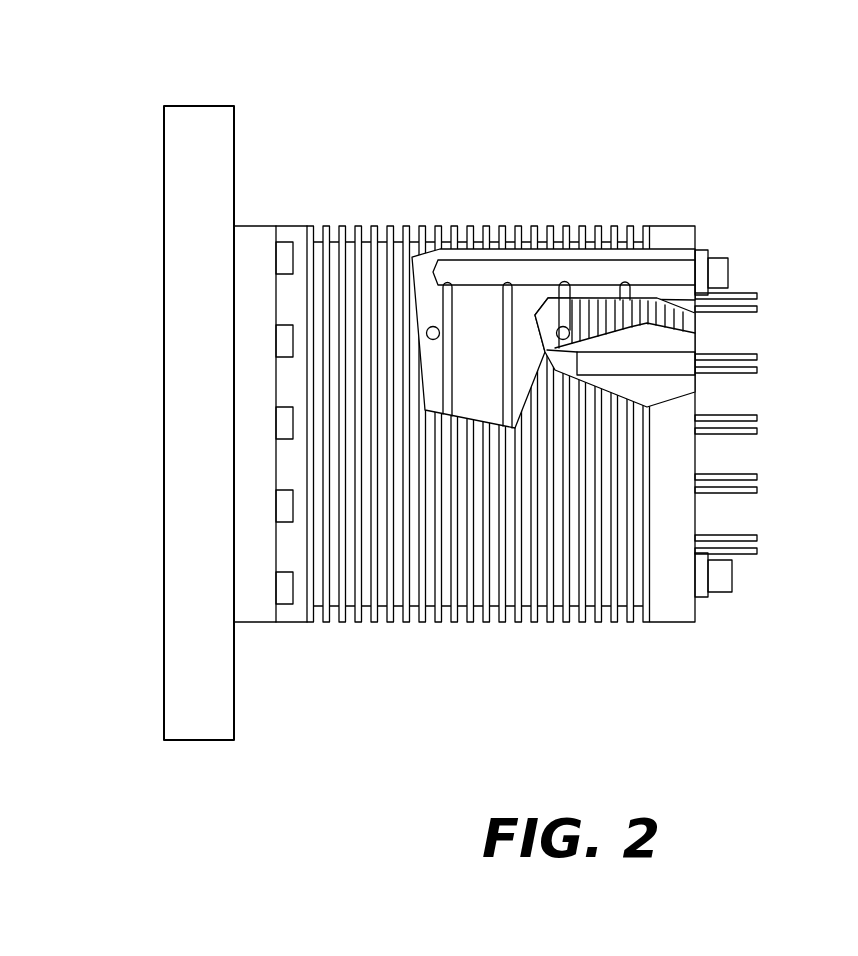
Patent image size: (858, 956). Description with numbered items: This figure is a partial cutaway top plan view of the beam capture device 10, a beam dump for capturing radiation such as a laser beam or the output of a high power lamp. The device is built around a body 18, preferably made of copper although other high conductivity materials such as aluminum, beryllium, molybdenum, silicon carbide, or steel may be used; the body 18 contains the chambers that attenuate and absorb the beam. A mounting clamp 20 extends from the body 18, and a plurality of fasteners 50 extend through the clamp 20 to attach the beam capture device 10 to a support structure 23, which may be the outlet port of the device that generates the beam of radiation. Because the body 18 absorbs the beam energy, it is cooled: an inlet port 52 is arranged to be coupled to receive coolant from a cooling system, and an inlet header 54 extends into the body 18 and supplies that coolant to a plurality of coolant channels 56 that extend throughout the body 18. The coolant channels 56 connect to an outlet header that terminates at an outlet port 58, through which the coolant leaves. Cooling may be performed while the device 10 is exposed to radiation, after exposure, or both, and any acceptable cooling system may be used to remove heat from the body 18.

The beam capture device 10 is at (443, 88).
The body 18 is at (672, 457).
The mounting clamp 20 is at (265, 242).
The support structure 23 is at (182, 184).
The fasteners 50 is at (283, 604).
The inlet port 52 is at (722, 273).
The inlet header 54 is at (668, 270).
The coolant channels 56 is at (449, 294).
The outlet port 58 is at (723, 573).